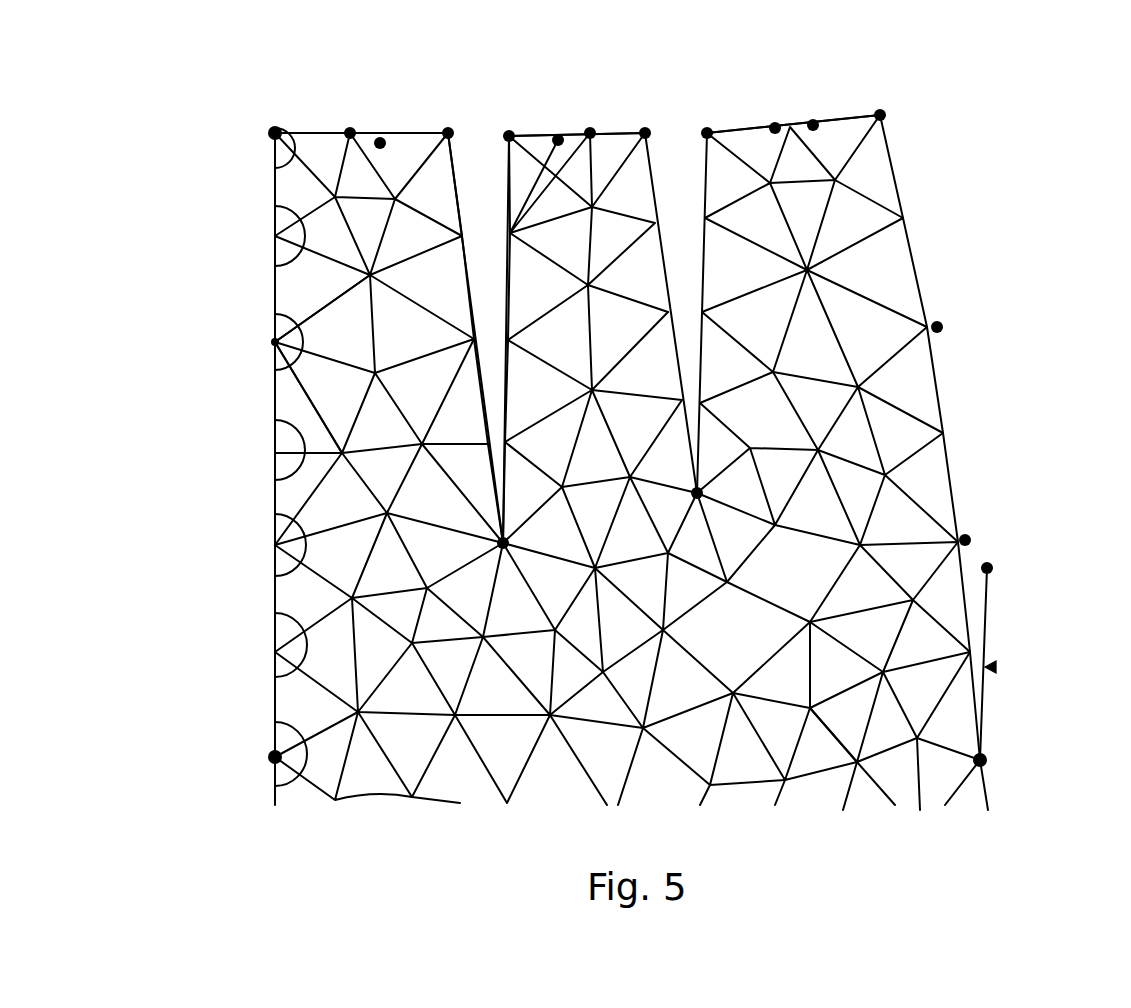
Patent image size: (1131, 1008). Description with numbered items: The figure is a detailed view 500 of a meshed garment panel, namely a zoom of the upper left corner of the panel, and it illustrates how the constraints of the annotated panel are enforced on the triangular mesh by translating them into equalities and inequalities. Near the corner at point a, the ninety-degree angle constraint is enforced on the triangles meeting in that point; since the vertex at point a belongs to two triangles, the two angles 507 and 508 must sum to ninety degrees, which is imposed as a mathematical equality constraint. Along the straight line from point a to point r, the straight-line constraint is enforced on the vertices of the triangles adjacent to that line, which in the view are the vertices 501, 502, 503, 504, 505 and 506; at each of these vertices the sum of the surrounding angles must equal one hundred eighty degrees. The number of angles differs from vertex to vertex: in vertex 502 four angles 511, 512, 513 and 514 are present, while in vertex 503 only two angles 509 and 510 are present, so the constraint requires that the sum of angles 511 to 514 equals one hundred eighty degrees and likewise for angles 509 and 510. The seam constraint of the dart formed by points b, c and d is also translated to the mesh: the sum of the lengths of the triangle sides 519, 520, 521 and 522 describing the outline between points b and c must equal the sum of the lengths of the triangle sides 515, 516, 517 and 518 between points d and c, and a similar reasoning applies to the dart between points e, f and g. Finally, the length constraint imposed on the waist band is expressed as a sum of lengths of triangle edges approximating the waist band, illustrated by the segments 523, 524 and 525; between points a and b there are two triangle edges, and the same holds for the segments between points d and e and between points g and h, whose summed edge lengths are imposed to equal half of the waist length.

The detailed view 500 is at (1046, 147).
The vertex 501 is at (275, 236).
The vertex 502 is at (275, 342).
The vertex 503 is at (275, 452).
The vertex 504 is at (275, 545).
The vertex 505 is at (275, 652).
The vertex 506 is at (275, 757).
The angle 507 is at (286, 157).
The angle 508 is at (291, 140).
The angle 509 is at (294, 462).
The angle 510 is at (294, 433).
The angle 511 is at (299, 343).
The angle 512 is at (300, 360).
The angle 513 is at (288, 310).
The angle 514 is at (279, 368).
The triangle side 515 is at (507, 490).
The triangle side 516 is at (506, 393).
The triangle side 517 is at (510, 296).
The triangle side 518 is at (511, 233).
The triangle side 519 is at (455, 203).
The triangle side 520 is at (455, 293).
The triangle side 521 is at (470, 411).
The triangle side 522 is at (468, 481).
The waist band segment 523 is at (446, 100).
The waist band segment 524 is at (640, 100).
The waist band segment 525 is at (872, 73).